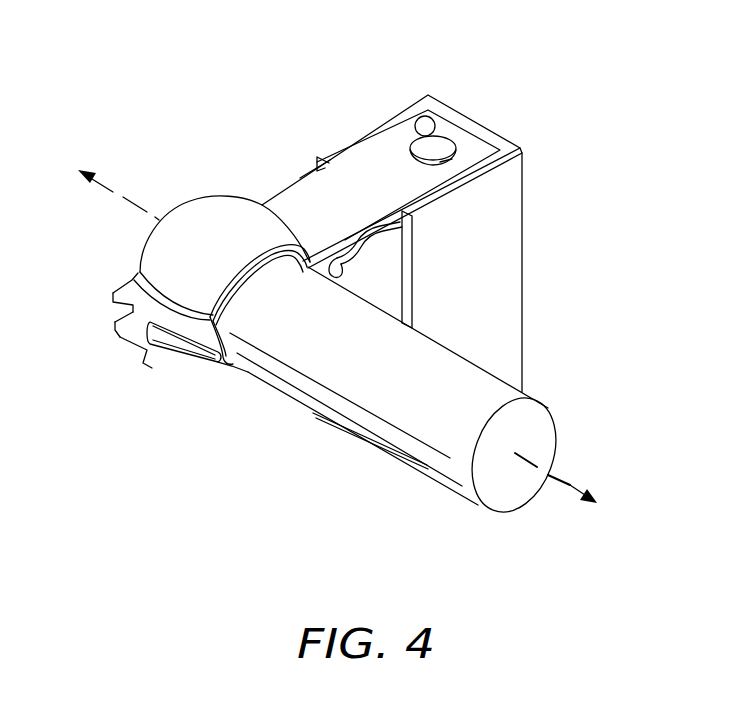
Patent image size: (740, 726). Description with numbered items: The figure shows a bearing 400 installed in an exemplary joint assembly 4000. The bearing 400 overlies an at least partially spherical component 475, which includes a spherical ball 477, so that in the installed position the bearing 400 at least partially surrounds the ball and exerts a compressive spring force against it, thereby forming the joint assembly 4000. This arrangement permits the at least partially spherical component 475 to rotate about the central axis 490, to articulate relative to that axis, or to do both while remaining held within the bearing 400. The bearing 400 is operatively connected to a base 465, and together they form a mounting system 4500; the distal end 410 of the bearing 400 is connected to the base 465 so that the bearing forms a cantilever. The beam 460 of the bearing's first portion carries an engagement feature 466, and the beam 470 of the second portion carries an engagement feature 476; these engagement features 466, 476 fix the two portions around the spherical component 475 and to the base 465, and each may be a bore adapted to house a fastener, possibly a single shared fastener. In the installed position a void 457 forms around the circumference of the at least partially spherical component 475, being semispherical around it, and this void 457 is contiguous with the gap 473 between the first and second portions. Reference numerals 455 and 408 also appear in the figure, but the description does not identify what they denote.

The joint assembly 4000 is at (203, 53).
The mounting system 4500 is at (507, 86).
The distal end 410 is at (443, 112).
The beam 460 is at (362, 160).
The base 465 is at (415, 140).
The engagement feature 466 is at (457, 147).
The bearing 400 is at (262, 205).
The engagement feature 476 is at (452, 159).
The beam 470 is at (413, 229).
The gap 473 is at (353, 267).
The clamp band 455 is at (330, 280).
The latch 408 is at (132, 342).
The at least partially spherical component 475 is at (172, 367).
The void 457 is at (217, 355).
The spherical ball 477 is at (427, 457).
The central axis 490 is at (573, 486).